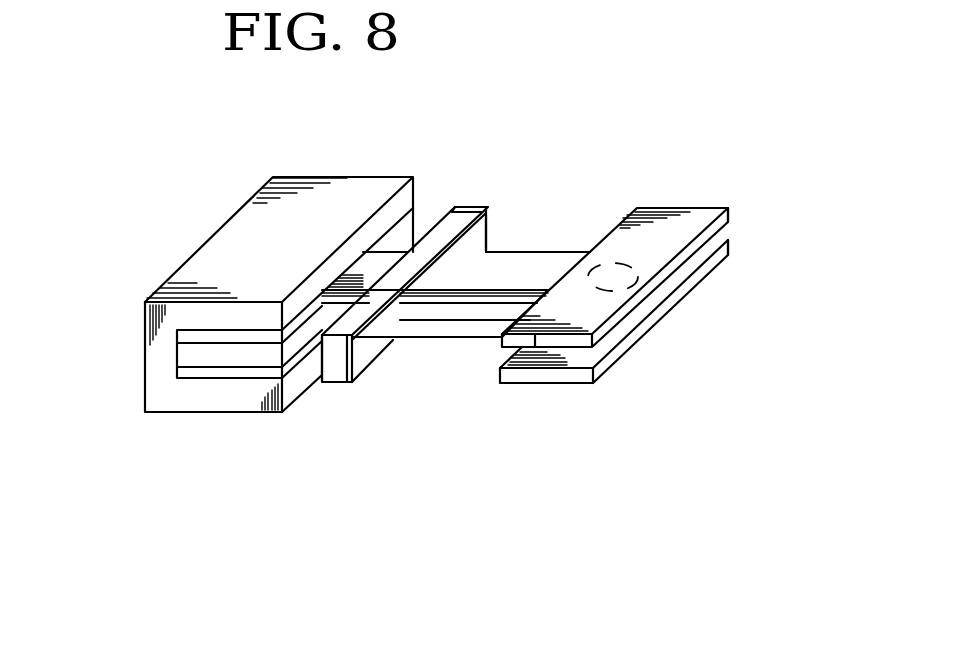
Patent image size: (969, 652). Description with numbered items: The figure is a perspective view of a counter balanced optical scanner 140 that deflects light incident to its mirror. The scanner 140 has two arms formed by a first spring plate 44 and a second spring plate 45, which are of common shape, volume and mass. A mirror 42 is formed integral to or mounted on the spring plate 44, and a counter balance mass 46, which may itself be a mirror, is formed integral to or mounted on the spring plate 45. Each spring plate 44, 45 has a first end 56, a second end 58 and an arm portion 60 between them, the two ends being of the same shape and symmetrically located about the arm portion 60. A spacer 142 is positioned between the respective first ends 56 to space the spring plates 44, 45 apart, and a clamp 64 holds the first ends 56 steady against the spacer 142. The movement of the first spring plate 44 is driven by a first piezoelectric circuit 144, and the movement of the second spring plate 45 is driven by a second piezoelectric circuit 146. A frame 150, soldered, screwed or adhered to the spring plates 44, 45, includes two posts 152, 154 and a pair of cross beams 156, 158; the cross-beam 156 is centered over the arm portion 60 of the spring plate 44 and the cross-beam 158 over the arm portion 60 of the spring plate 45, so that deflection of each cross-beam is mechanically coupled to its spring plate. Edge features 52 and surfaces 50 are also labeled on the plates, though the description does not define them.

The counter balanced optical scanner 140 is at (757, 108).
The clamp 64 is at (300, 193).
The first end 56 is at (213, 335).
The spacer 142 is at (187, 356).
The frame 150 is at (434, 190).
The first piezoelectric circuit 144 is at (461, 200).
The post 154 is at (483, 232).
The arm portion 60 is at (498, 262).
The first spring plate 44 is at (547, 258).
The second spring plate 45 is at (460, 338).
The mirror 42 is at (632, 213).
The plate edges 52 is at (677, 206).
The second end 58 is at (720, 205).
The counter balance mass 46 is at (680, 300).
The plate surfaces 50 is at (535, 342).
The post 152 is at (333, 372).
The cross-beam 156 is at (316, 360).
The second piezoelectric circuit 146 is at (356, 385).
The cross-beam 158 is at (386, 357).